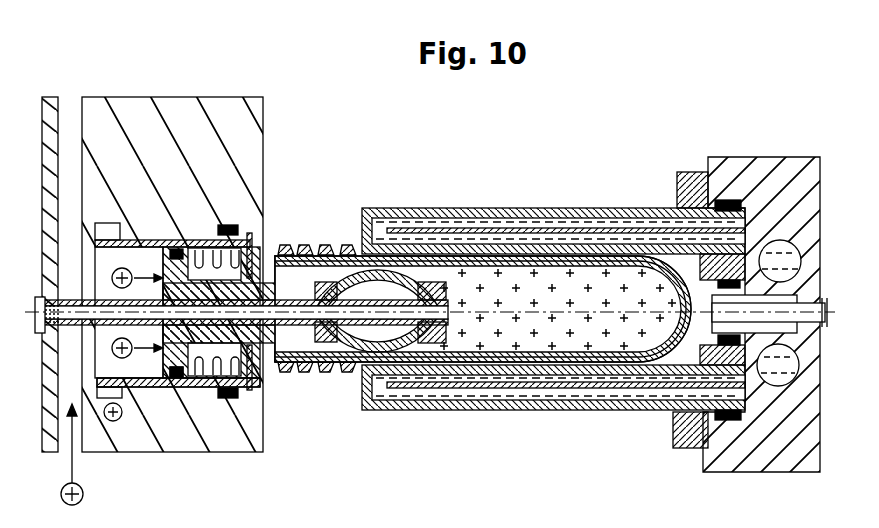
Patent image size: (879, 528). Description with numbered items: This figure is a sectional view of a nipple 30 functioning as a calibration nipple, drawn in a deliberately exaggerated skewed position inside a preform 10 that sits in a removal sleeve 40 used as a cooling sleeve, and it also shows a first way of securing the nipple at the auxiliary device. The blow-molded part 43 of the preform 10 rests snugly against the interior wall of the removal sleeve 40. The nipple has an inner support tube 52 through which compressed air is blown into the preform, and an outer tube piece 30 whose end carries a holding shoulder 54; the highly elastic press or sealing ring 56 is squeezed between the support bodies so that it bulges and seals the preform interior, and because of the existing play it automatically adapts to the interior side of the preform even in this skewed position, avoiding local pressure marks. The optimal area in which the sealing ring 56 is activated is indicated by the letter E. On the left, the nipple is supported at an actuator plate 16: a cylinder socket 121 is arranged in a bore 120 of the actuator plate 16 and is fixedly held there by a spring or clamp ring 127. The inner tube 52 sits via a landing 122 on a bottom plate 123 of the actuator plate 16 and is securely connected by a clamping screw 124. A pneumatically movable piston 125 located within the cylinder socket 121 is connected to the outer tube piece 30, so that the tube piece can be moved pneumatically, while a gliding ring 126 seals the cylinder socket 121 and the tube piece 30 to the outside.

The preform 10 is at (483, 314).
The actuator plate 16 is at (228, 125).
The nipple 30 is at (262, 277).
The removal sleeve 40 is at (605, 412).
The blow-molded part 43 is at (520, 372).
The support tube 52 is at (300, 290).
The holding shoulder 54 is at (325, 372).
The sealing ring 56 is at (423, 378).
The optimal area E is at (382, 258).
The bore 120 is at (273, 370).
The cylinder socket 121 is at (212, 395).
The landing 122 is at (40, 297).
The bottom plate 123 is at (50, 100).
The clamping screw 124 is at (40, 334).
The piston 125 is at (162, 268).
The gliding ring 126 is at (228, 232).
The clamp ring 127 is at (252, 402).